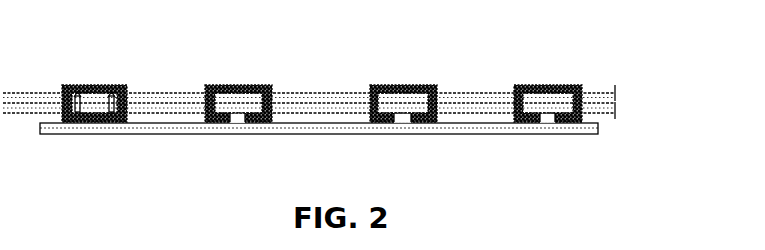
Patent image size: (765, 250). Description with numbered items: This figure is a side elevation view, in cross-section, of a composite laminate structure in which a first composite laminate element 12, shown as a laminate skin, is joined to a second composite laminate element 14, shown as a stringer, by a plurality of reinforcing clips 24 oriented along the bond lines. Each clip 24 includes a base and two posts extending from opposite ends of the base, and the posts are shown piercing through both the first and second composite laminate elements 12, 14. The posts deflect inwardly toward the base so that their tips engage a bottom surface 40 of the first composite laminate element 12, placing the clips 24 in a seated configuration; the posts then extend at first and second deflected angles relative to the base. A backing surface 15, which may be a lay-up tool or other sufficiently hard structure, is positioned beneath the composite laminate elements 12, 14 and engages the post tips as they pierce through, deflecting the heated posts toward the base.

The reinforcing clip 24 is at (95, 85).
The second composite laminate element 14 is at (615, 94).
The first composite laminate element 12 is at (615, 108).
The bottom surface 40 is at (467, 115).
The backing surface 15 is at (247, 122).